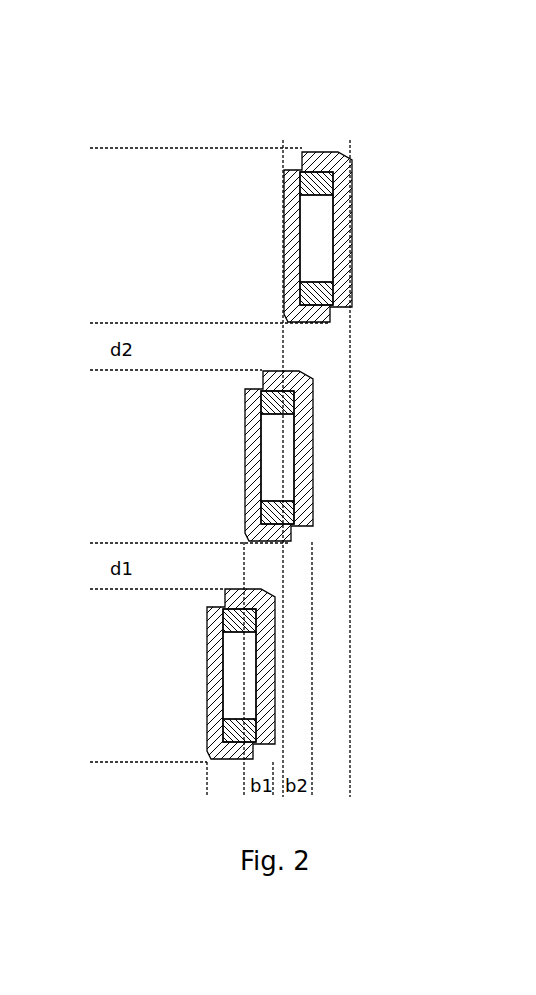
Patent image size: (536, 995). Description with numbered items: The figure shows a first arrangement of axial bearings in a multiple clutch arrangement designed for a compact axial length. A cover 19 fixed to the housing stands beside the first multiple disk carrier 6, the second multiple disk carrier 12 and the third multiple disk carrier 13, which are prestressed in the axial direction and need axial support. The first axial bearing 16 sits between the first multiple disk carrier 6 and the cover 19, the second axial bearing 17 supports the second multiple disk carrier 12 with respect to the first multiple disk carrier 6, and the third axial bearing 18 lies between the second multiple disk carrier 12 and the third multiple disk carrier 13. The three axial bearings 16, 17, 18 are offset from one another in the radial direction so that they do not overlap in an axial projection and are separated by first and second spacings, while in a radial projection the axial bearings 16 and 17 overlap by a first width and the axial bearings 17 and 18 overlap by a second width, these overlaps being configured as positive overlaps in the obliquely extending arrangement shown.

The first multiple disk carrier 6 is at (233, 75).
The second multiple disk carrier 12 is at (275, 103).
The third multiple disk carrier 13 is at (312, 128).
The first axial bearing 16 is at (238, 683).
The second axial bearing 17 is at (277, 460).
The third axial bearing 18 is at (317, 220).
The cover 19 is at (187, 107).